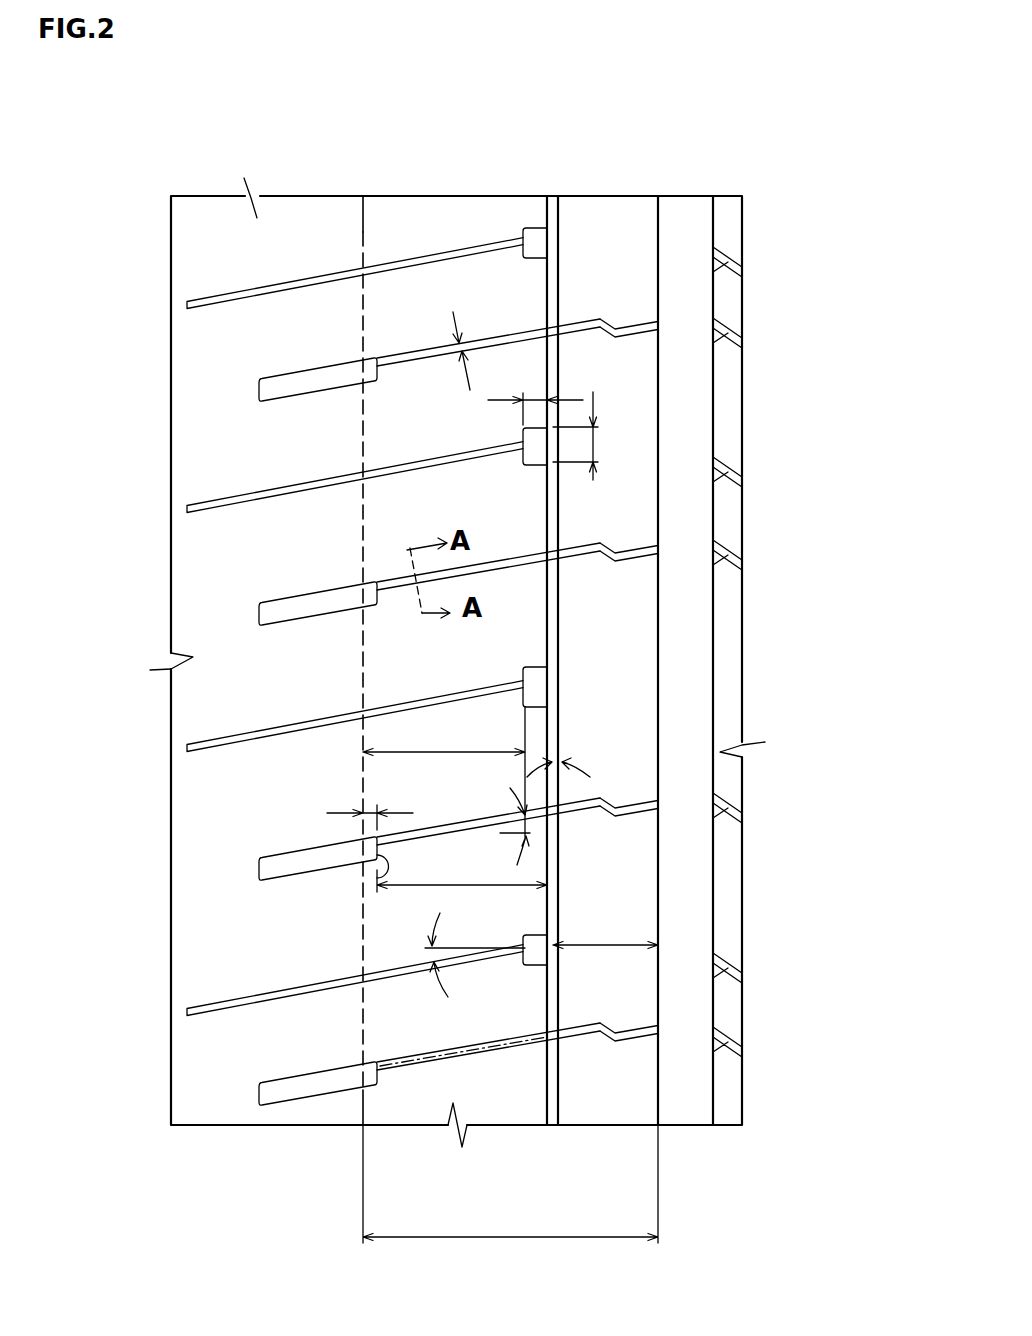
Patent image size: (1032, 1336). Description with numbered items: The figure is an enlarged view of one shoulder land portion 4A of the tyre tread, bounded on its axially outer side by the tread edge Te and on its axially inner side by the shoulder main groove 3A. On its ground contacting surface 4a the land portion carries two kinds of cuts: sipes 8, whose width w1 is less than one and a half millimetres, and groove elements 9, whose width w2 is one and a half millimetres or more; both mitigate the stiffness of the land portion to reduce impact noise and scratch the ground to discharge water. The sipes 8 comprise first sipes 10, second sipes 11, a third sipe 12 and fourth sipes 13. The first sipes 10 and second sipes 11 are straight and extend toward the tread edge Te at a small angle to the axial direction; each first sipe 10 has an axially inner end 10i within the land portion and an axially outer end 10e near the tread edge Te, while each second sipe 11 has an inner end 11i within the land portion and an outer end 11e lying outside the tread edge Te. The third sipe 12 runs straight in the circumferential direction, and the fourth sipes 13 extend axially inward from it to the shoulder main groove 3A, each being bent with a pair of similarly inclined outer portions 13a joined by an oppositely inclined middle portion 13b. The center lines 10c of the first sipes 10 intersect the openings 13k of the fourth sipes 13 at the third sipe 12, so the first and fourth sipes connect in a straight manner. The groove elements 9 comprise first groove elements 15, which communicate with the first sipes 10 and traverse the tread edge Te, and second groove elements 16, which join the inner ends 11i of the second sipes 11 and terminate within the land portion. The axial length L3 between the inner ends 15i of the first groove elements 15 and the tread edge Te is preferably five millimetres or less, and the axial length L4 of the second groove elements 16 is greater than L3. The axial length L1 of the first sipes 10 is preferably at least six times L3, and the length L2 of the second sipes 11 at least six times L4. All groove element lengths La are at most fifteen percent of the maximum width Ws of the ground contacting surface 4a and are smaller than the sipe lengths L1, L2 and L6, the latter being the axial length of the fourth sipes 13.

The shoulder land portion 4A is at (453, 138).
The tread edge Te is at (362, 230).
The ground contacting surface 4a is at (393, 218).
The sipes 8 is at (468, 252).
The axially inner end of second sipe 11i is at (533, 240).
The second groove elements 16 is at (556, 240).
The shoulder main groove 3A is at (682, 220).
The width of sipes w1 is at (457, 347).
The middle portion of fourth sipe 13b is at (563, 327).
The outer portions of fourth sipe 13a is at (640, 327).
The fourth sipes 13 is at (847, 253).
The length of groove elements La is at (535, 393).
The length of second groove elements L4 is at (845, 434).
The width of groove elements w2 is at (595, 443).
The groove elements 9 is at (537, 462).
The axially inner end of first sipe 10i is at (537, 560).
The first sipes 10 is at (497, 565).
The length of fourth sipes L6 is at (610, 943).
The third sipe 12 is at (553, 997).
The axially outer end of second sipe 11e is at (187, 305).
The second sipes 11 is at (405, 265).
The first groove elements 15 is at (368, 374).
The axially outer end of first sipe 10e is at (378, 585).
The length of second sipes L2 is at (443, 750).
The length between inner ends of first groove elements and tread edge L3 is at (370, 812).
The inner ends of first groove elements 15i is at (377, 872).
The length of first sipes L1 is at (427, 885).
The center lines of first sipes 10c is at (468, 1056).
The openings of fourth sipes 13k is at (556, 1040).
The maximum width of ground contacting surface Ws is at (510, 1199).